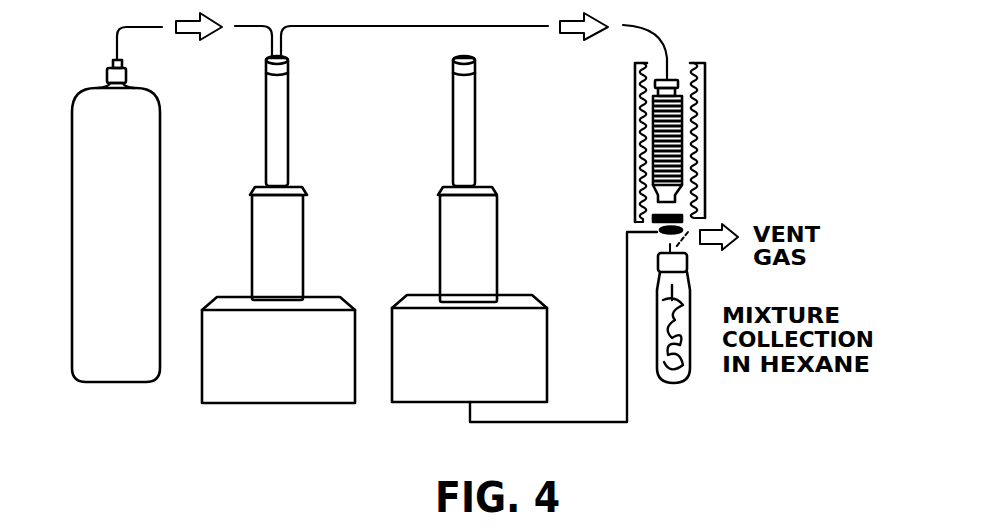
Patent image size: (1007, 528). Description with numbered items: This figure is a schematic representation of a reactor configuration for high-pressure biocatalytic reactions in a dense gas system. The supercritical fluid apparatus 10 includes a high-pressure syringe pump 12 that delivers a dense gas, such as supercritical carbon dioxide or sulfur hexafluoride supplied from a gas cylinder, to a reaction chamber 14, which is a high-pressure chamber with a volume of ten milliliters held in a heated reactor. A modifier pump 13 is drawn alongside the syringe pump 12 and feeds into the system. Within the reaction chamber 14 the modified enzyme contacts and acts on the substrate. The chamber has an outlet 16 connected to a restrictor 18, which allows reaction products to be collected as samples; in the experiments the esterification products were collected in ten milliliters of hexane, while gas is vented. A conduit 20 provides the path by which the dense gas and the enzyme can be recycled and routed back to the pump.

The supercritical fluid apparatus 10 is at (203, 426).
The high-pressure syringe pump 12 is at (290, 403).
The modifier pump 13 is at (442, 402).
The reaction chamber 14 is at (688, 199).
The outlet 16 is at (688, 209).
The restrictor 18 is at (645, 228).
The conduit 20 is at (627, 403).